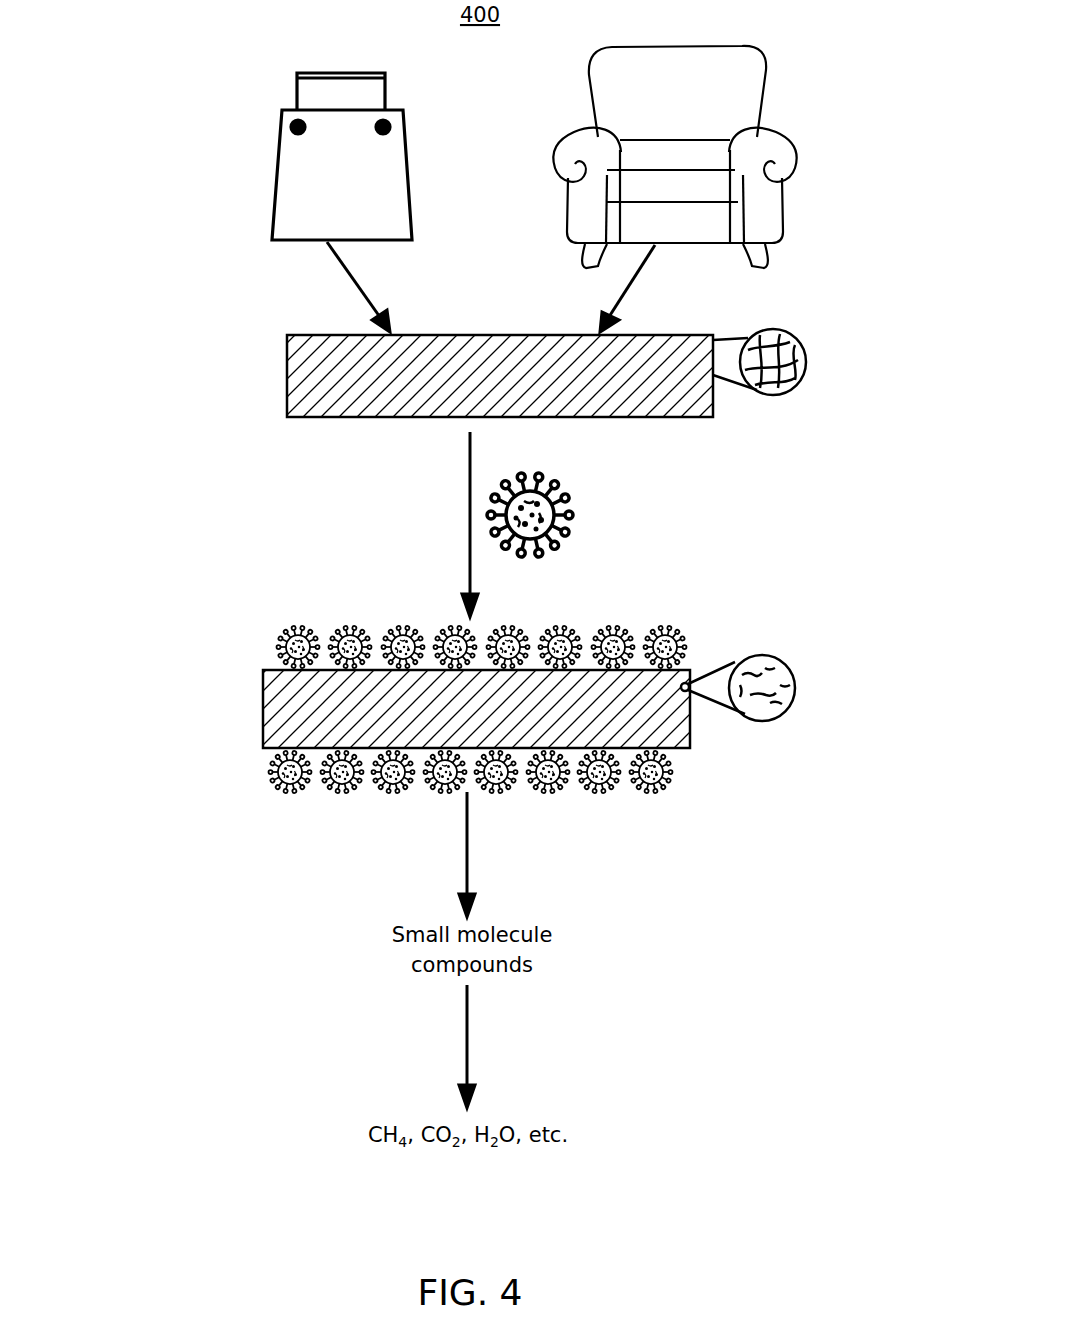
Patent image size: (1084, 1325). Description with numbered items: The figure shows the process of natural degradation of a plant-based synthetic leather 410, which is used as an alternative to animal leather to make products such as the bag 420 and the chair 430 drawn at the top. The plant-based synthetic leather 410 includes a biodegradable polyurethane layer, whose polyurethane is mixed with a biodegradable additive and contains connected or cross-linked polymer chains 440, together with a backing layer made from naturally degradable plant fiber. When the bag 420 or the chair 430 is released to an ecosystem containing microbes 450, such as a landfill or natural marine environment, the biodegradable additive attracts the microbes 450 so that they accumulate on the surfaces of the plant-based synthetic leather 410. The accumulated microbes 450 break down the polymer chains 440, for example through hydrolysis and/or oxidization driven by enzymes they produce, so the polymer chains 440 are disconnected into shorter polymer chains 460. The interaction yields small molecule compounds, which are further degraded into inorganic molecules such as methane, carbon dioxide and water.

The plant-based synthetic leather 410 is at (263, 705).
The bag 420 is at (333, 193).
The chair 430 is at (745, 192).
The polymer chains 440 is at (803, 356).
The microbes 450 is at (572, 505).
The shorter polymer chains 460 is at (795, 688).